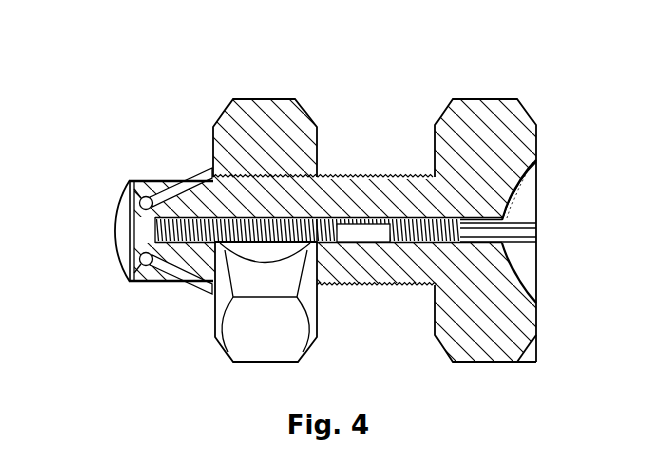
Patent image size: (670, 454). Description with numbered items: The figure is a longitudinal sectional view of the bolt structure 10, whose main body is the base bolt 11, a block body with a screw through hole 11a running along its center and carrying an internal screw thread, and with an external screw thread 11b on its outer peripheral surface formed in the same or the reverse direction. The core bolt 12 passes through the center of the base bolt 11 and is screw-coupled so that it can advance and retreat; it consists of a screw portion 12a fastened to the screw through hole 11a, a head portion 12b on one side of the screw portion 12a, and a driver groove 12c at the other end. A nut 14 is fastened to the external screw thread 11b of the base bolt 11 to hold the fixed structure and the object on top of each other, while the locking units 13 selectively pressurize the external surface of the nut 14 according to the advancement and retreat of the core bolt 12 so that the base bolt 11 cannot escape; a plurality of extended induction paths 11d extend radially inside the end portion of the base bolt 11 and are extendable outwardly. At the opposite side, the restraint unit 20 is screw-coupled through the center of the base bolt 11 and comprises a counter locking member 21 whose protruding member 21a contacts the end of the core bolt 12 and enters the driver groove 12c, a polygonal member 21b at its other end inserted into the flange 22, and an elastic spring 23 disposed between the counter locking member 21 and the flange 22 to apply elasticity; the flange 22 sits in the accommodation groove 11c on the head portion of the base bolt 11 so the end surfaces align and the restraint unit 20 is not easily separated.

The bolt structure 10 is at (165, 115).
The base bolt 11 is at (384, 198).
The screw through hole 11a is at (150, 249).
The external screw thread 11b is at (359, 292).
The accommodation groove 11c is at (519, 272).
The extended induction paths 11d is at (177, 282).
The core bolt 12 is at (115, 229).
The screw portion 12a is at (128, 222).
The head portion 12b is at (128, 210).
The driver groove 12c is at (103, 261).
The locking units 13 is at (213, 293).
The nut 14 is at (267, 98).
The restraint unit 20 is at (476, 174).
The counter locking member 21 is at (458, 175).
The protruding member 21a is at (373, 224).
The polygonal member 21b is at (538, 228).
The flange 22 is at (524, 192).
The elastic spring 23 is at (520, 172).